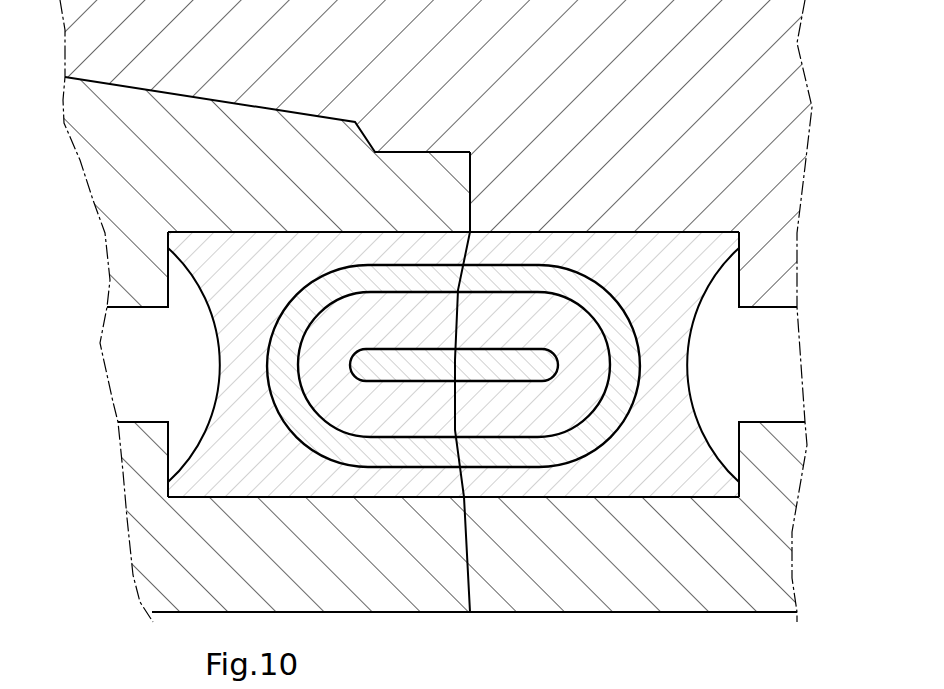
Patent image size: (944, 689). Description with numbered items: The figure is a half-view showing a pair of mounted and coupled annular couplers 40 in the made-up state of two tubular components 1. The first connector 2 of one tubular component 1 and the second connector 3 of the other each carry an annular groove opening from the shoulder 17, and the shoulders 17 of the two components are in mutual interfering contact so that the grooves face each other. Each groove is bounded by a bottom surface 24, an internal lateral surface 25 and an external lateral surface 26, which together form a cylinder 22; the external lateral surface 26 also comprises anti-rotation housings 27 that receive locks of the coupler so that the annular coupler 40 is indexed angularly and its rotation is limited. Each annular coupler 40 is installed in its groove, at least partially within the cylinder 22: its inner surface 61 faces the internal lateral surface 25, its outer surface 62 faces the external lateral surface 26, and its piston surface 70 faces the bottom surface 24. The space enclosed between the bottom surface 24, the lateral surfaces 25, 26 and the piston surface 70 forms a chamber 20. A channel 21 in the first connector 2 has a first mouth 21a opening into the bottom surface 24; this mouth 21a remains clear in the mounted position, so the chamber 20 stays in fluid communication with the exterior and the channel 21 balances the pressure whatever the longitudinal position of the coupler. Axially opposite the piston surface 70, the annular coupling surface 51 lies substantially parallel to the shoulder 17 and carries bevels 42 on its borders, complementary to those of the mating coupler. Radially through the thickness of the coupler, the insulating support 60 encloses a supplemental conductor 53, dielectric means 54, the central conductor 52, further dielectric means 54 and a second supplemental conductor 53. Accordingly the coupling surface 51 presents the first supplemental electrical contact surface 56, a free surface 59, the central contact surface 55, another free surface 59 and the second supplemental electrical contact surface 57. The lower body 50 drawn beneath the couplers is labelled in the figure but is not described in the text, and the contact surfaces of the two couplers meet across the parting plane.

The tubular component 1 is at (133, 580).
The first connector 2 is at (118, 149).
The second connector 3 is at (686, 66).
The shoulder 17 is at (469, 170).
The chamber 20 is at (184, 374).
The channel 21 is at (109, 366).
The first mouth 21a is at (167, 368).
The cylinder 22 is at (646, 239).
The bottom surface 24 is at (170, 443).
The internal lateral surface 25 is at (239, 497).
The external lateral surface 26 is at (180, 240).
The anti-rotation housings 27 is at (433, 231).
The annular coupler 40 is at (198, 483).
The bevel 42 is at (493, 250).
The lower body 50 is at (384, 473).
The annular coupling surface 51 is at (453, 338).
The central conductor 52 is at (353, 362).
The supplemental conductor 53 is at (273, 363).
The dielectric means 54 is at (308, 376).
The central contact surface 55 is at (453, 367).
The first supplemental electrical contact surface 56 is at (453, 285).
The second supplemental electrical contact surface 57 is at (425, 467).
The free surface 59 is at (453, 327).
The insulating support 60 is at (236, 465).
The inner surface 61 is at (233, 232).
The outer surface 62 is at (229, 497).
The piston surface 70 is at (215, 333).